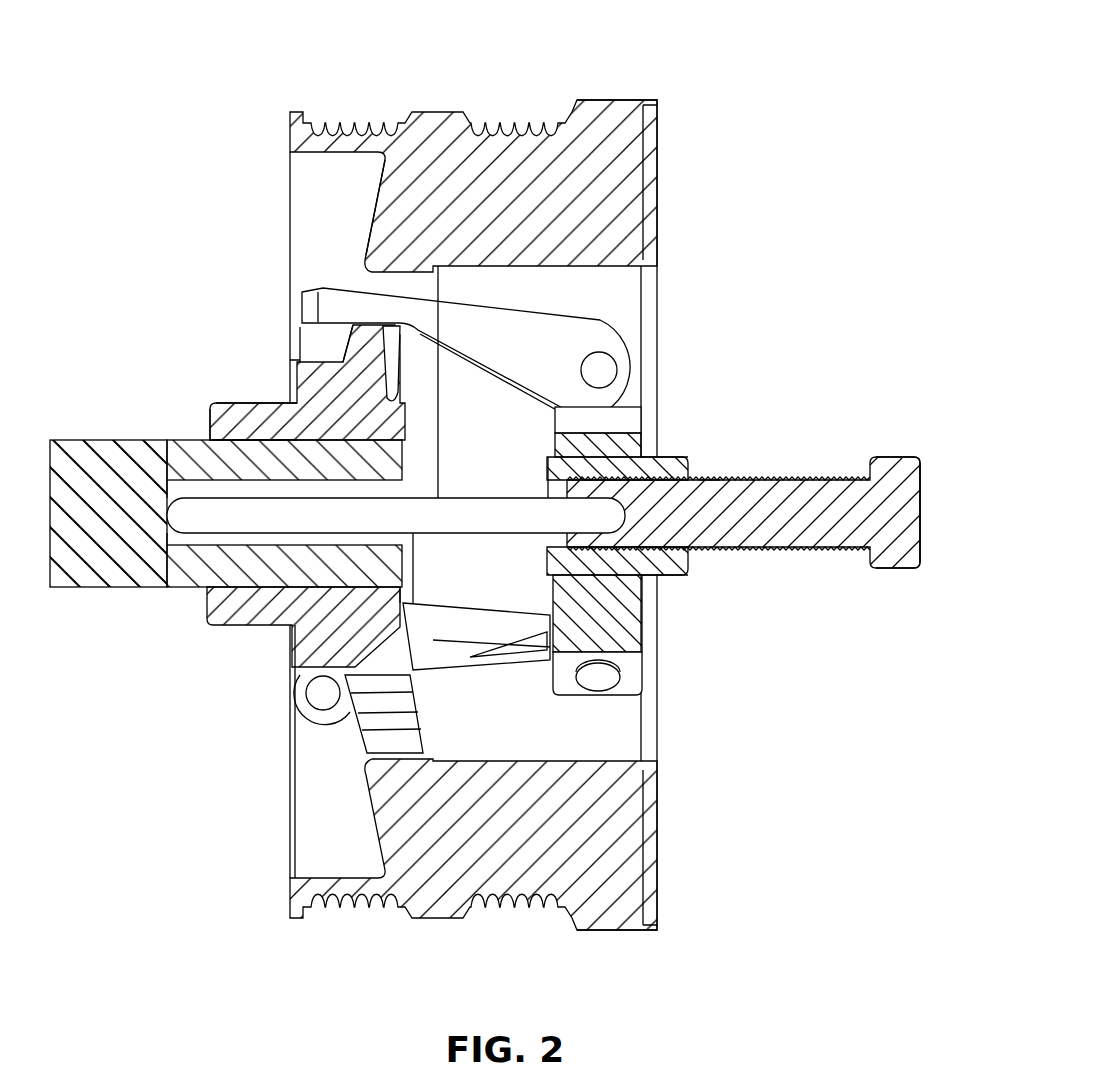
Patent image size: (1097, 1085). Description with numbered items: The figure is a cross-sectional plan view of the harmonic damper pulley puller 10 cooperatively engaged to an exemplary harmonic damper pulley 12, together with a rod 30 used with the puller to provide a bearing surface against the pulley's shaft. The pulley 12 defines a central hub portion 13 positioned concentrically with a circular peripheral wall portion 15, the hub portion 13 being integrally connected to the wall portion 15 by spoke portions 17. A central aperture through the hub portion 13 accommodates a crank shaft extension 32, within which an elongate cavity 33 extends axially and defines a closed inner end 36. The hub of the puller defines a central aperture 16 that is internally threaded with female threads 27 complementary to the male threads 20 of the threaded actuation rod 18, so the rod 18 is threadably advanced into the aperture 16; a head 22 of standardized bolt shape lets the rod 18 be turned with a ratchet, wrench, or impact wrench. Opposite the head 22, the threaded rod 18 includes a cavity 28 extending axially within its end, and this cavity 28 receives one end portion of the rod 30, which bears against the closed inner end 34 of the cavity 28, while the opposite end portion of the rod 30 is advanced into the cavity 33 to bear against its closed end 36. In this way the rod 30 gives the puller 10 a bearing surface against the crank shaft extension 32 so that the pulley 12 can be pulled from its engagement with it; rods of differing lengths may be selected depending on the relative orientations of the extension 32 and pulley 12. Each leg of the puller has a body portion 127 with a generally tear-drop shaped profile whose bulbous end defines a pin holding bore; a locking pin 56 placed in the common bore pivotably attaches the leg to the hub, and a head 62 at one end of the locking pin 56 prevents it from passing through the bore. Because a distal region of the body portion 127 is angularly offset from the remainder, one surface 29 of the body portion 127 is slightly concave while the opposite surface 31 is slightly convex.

The harmonic damper pulley puller 10 is at (892, 588).
The harmonic damper pulley 12 is at (588, 83).
The hub portion 13 is at (287, 628).
The wall portion 15 is at (600, 165).
The central aperture 16 is at (697, 557).
The spoke portions 17 is at (372, 355).
The threaded actuation rod 18 is at (913, 455).
The male threads 20 is at (777, 480).
The head 22 is at (903, 540).
The female threads 27 is at (707, 478).
The cavity 28 is at (303, 680).
The concave surface 29 is at (352, 383).
The rod 30 is at (128, 565).
The convex surface 31 is at (397, 272).
The crank shaft extension 32 is at (78, 565).
The cavity 33 is at (212, 565).
The closed inner end 34 is at (663, 577).
The closed inner end 36 is at (158, 513).
The locking pin 56 is at (599, 370).
The head 62 is at (602, 685).
The body portion 127 is at (513, 322).